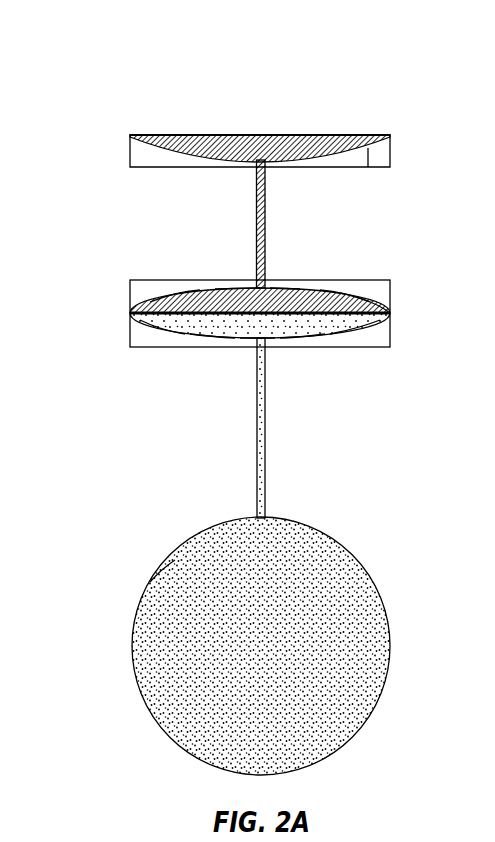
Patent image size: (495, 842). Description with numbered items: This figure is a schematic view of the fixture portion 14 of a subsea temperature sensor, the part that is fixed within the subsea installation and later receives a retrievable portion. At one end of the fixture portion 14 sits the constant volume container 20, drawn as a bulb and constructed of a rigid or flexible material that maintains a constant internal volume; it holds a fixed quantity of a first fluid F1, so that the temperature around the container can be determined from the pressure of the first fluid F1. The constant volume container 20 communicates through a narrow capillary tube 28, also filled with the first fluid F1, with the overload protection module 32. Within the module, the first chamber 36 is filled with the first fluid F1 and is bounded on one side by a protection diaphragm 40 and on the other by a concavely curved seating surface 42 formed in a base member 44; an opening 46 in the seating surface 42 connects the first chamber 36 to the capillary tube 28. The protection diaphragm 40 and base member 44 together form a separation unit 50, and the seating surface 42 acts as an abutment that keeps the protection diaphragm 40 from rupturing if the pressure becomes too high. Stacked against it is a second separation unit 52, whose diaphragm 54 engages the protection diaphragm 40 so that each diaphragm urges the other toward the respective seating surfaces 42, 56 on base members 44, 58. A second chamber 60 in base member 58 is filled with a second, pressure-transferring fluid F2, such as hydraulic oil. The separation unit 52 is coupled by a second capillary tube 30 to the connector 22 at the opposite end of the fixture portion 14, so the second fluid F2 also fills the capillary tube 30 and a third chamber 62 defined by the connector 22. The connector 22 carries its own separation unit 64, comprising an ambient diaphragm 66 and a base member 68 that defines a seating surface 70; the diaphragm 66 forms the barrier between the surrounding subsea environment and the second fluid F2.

The fixture portion 14 is at (390, 72).
The constant volume container 20 is at (132, 650).
The connector 22 is at (312, 125).
The capillary tube 28 is at (267, 430).
The capillary tube 30 is at (268, 213).
The overload protection module 32 is at (390, 327).
The first chamber 36 is at (168, 327).
The protection diaphragm 40 is at (327, 323).
The seating surface 42 is at (205, 332).
The base member 44 is at (297, 338).
The opening 46 is at (252, 333).
The separation unit 50 is at (123, 331).
The separation unit 52 is at (123, 299).
The diaphragm 54 is at (179, 297).
The seating surface 56 is at (340, 295).
The base member 58 is at (373, 290).
The second chamber 60 is at (228, 292).
The third chamber 62 is at (258, 137).
The separation unit 64 is at (124, 153).
The diaphragm 66 is at (187, 137).
The base member 68 is at (150, 162).
The seating surface 70 is at (371, 160).
The first fluid F1 is at (160, 590).
The second fluid F2 is at (288, 295).